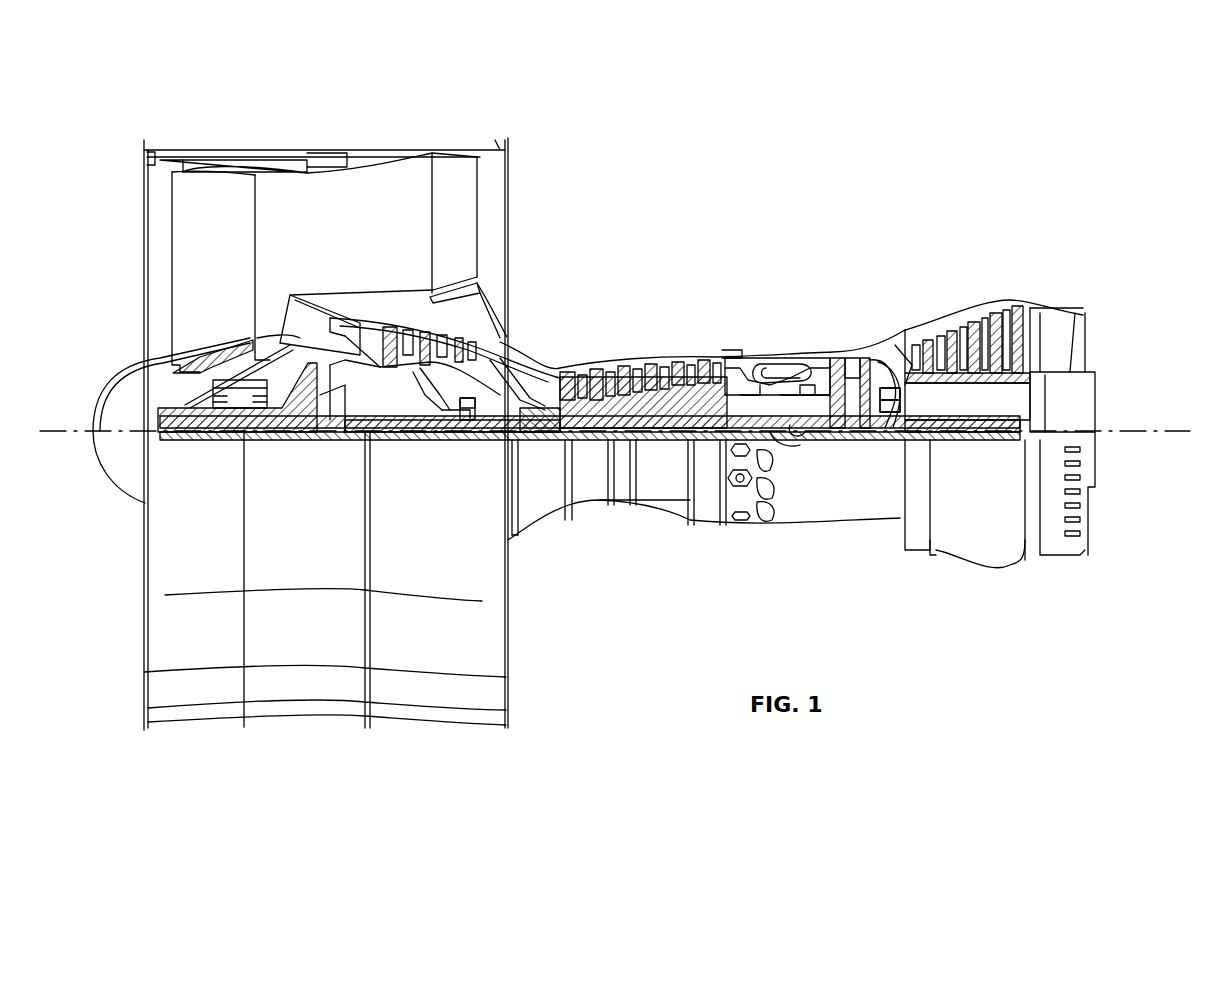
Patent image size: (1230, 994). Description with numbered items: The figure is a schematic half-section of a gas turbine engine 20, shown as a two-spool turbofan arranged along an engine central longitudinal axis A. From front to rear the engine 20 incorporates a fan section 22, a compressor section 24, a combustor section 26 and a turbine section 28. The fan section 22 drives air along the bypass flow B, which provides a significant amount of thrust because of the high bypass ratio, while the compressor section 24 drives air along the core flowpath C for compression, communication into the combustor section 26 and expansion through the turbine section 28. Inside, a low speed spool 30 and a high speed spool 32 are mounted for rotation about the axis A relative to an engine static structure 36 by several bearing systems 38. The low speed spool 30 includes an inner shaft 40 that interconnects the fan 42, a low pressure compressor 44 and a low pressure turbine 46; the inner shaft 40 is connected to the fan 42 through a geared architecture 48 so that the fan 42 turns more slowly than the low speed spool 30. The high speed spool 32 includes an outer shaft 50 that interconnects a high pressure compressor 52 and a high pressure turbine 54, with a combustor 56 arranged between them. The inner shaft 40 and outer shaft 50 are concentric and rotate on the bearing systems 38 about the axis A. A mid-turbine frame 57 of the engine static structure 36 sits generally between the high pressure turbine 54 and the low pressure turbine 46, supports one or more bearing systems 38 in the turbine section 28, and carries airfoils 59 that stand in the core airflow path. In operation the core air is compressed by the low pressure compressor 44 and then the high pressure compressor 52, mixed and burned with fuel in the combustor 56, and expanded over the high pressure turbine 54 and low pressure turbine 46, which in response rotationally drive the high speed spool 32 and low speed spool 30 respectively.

The gas turbine engine 20 is at (785, 197).
The fan section 22 is at (253, 135).
The compressor section 24 is at (555, 336).
The combustor section 26 is at (778, 322).
The turbine section 28 is at (925, 290).
The low speed spool 30 is at (662, 442).
The high speed spool 32 is at (710, 392).
The engine static structure 36 is at (703, 522).
The bearing systems 38 is at (466, 418).
The inner shaft 40 is at (535, 442).
The fan 42 is at (300, 337).
The low pressure compressor 44 is at (445, 333).
The low pressure turbine 46 is at (975, 305).
The geared architecture 48 is at (333, 412).
The outer shaft 50 is at (790, 425).
The high pressure compressor 52 is at (643, 408).
The high pressure turbine 54 is at (848, 355).
The combustor 56 is at (785, 364).
The mid-turbine frame 57 is at (892, 332).
The airfoils 59 is at (885, 367).
The engine central longitudinal axis A is at (1180, 431).
The bypass flow B is at (292, 223).
The core flowpath C is at (332, 334).